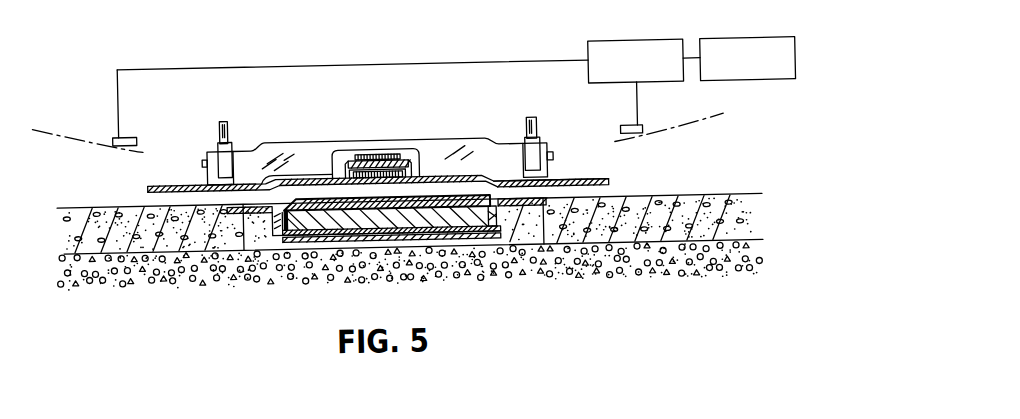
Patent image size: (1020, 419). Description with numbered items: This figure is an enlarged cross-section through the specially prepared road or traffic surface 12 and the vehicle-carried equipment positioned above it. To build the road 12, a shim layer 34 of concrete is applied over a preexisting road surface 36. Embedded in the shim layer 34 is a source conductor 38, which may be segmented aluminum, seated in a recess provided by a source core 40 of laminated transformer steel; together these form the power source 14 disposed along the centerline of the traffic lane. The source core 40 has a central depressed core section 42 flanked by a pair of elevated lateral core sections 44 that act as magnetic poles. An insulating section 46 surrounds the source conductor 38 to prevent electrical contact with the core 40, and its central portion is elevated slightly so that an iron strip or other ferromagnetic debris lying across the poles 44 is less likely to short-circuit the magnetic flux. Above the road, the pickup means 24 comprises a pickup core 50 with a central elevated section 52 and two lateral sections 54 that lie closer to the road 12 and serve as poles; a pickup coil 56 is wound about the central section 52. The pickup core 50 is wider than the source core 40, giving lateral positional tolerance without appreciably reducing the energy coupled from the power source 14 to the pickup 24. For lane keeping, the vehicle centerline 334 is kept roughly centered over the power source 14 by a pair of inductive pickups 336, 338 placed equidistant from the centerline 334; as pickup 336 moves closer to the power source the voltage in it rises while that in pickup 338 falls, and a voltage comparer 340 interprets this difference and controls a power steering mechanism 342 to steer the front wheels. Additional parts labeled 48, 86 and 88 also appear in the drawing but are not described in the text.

The road or traffic surface 12 is at (708, 198).
The power source 14 is at (453, 193).
The pickup means 24 is at (188, 176).
The shim layer 34 is at (100, 200).
The preexisting road surface 36 is at (161, 279).
The source conductor 38 is at (322, 234).
The source core 40 is at (580, 197).
The central depressed core section 42 is at (457, 238).
The elevated lateral core sections 44 is at (243, 247).
The insulating section 46 is at (364, 207).
The base strip 48 is at (377, 254).
The pickup core 50 is at (322, 162).
The central elevated section 52 is at (423, 148).
The lateral sections 54 is at (579, 161).
The pickup coil 56 is at (379, 154).
The sensor body 86 is at (339, 147).
The terminal pin 88 is at (221, 120).
The centerline 334 is at (377, 76).
The inductive pickup 336 is at (129, 131).
The inductive pickup 338 is at (645, 130).
The voltage comparer 340 is at (598, 51).
The power steering mechanism 342 is at (787, 50).